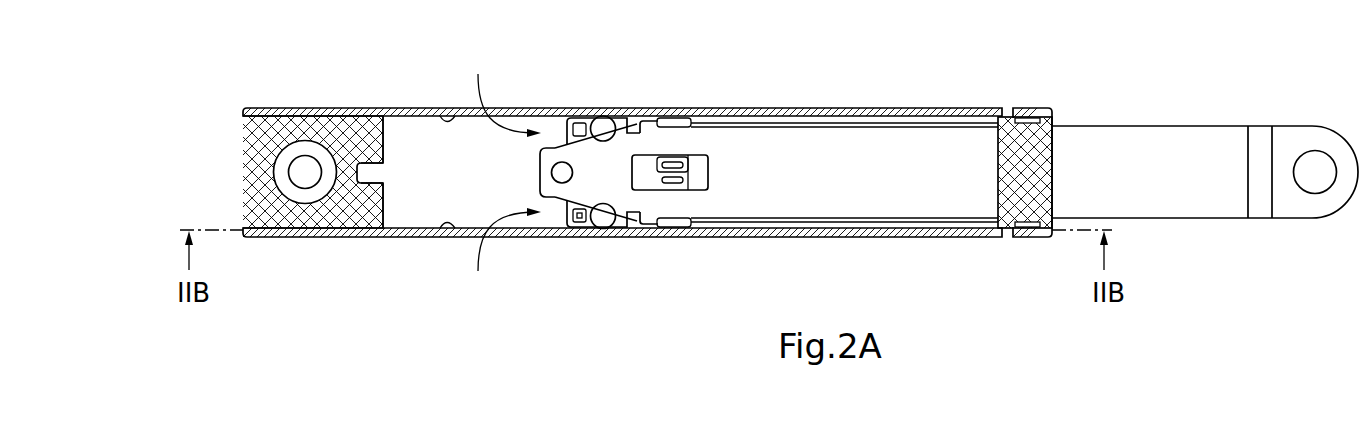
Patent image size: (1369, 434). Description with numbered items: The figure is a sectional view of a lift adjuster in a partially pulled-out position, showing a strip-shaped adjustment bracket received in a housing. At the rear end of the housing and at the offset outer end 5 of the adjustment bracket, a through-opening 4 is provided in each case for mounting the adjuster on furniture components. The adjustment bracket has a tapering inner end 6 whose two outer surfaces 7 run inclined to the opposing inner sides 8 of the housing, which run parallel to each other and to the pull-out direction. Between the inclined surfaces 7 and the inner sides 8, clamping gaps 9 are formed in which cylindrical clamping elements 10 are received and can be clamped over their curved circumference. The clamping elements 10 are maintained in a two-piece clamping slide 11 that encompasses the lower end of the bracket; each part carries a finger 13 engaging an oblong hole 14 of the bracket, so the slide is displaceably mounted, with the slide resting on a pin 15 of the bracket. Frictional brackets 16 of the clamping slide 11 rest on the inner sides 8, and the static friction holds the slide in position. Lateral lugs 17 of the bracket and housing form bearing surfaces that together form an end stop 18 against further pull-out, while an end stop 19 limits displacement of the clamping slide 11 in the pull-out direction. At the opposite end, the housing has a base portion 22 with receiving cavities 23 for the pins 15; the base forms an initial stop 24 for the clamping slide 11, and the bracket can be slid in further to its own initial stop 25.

The through-opening 4 is at (305, 168).
The offset outer end 5 is at (1327, 140).
The tapering inner end 6 is at (608, 163).
The outer surfaces 7 is at (555, 148).
The inner sides 8 is at (440, 114).
The clamping gaps 9 is at (504, 175).
The clamping elements 10 is at (600, 120).
The clamping slide 11 is at (578, 222).
The finger 13 is at (686, 165).
The oblong hole 14 is at (697, 180).
The pin 15 is at (551, 174).
The frictional brackets 16 is at (682, 119).
The lateral lugs 17 is at (651, 121).
The end stop 18 is at (997, 224).
The end stop for the clamping slide 19 is at (998, 147).
The base portion 22 is at (270, 140).
The receiving cavities 23 is at (378, 172).
The initial stop for the clamping slide 24 is at (385, 203).
The initial stop for the adjustment bracket 25 is at (369, 158).